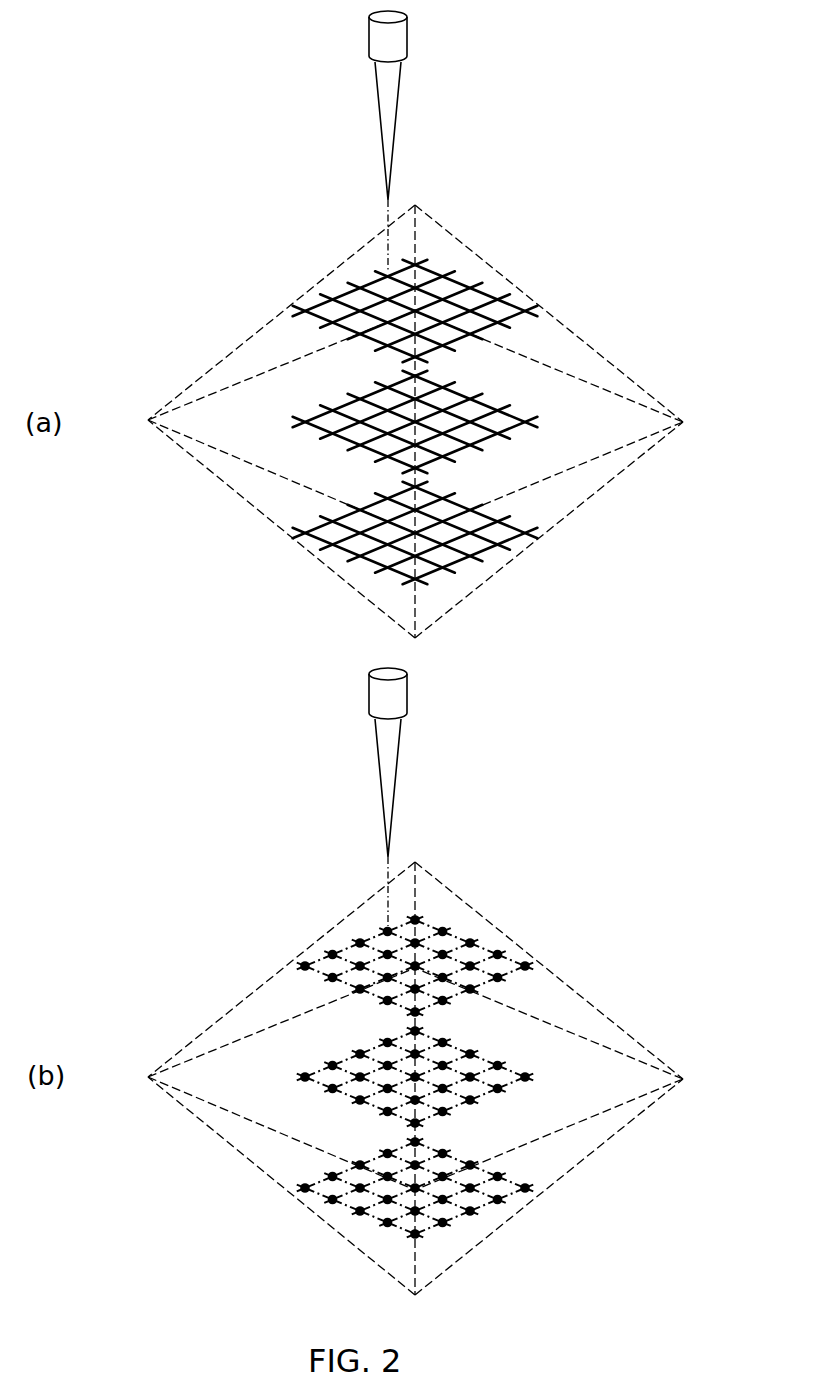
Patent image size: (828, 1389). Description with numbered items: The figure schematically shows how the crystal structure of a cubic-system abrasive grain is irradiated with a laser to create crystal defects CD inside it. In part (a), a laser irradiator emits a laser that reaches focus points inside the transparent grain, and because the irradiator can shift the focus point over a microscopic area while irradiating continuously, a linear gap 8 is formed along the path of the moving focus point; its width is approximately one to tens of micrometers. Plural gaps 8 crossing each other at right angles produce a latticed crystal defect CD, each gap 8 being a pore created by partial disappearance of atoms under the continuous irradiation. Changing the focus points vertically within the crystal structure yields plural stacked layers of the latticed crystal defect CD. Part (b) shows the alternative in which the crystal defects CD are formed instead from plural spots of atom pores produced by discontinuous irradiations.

The gap 8 is at (528, 312).
The crystal defect CD is at (527, 1187).